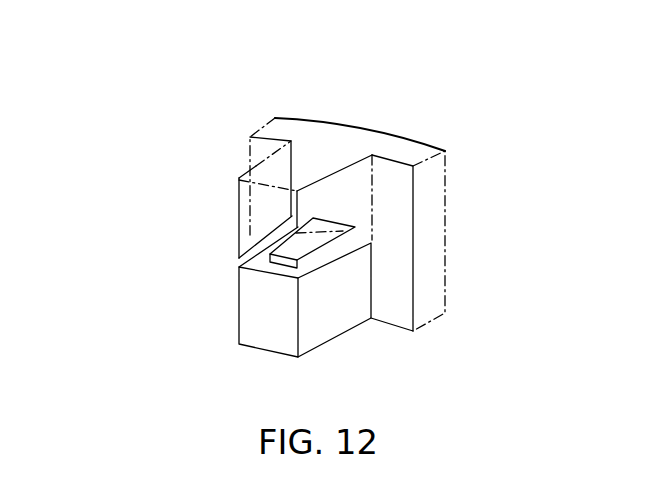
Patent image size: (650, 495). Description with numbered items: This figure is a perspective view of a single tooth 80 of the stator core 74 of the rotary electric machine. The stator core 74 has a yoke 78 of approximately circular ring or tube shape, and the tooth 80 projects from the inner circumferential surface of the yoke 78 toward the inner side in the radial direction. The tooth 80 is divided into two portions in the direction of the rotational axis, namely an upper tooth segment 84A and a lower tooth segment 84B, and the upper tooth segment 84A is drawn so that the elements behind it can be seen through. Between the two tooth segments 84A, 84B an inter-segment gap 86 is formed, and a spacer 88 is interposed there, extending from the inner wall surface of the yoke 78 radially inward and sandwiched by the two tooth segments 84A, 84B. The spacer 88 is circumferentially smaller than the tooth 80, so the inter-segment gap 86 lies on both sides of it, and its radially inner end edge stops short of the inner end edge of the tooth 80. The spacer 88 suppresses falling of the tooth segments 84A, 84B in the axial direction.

The stator core 74 is at (345, 100).
The yoke 78 is at (400, 148).
The tooth 80 is at (303, 162).
The upper tooth segment 84A is at (258, 202).
The lower tooth segment 84B is at (250, 296).
The inter-segment gap 86 is at (233, 259).
The spacer 88 is at (283, 248).